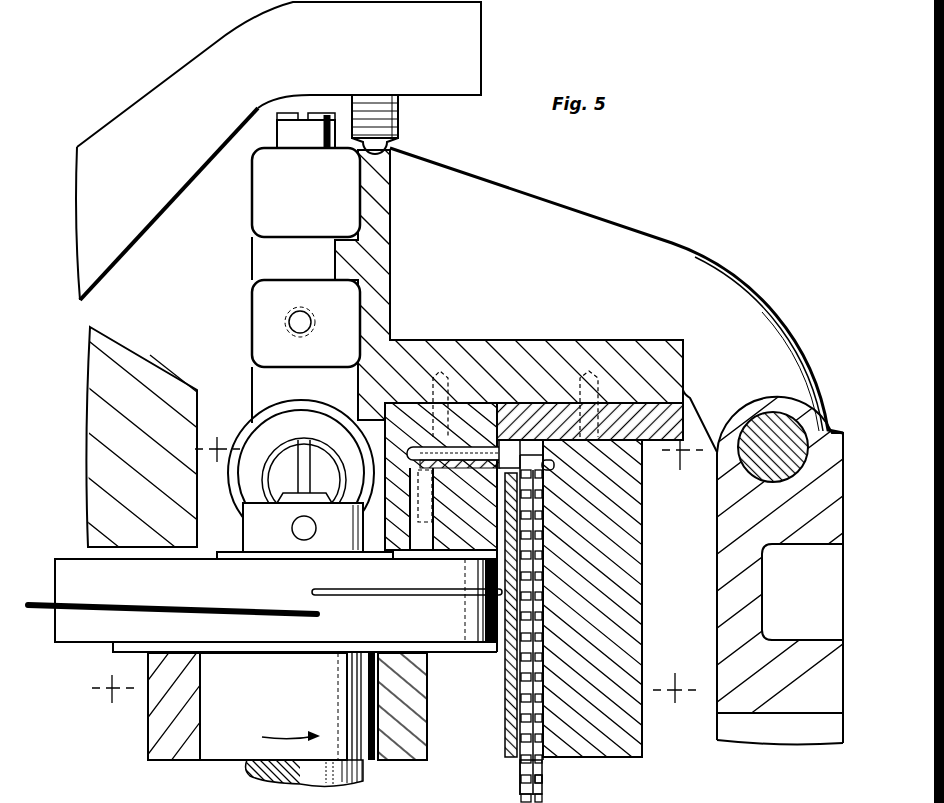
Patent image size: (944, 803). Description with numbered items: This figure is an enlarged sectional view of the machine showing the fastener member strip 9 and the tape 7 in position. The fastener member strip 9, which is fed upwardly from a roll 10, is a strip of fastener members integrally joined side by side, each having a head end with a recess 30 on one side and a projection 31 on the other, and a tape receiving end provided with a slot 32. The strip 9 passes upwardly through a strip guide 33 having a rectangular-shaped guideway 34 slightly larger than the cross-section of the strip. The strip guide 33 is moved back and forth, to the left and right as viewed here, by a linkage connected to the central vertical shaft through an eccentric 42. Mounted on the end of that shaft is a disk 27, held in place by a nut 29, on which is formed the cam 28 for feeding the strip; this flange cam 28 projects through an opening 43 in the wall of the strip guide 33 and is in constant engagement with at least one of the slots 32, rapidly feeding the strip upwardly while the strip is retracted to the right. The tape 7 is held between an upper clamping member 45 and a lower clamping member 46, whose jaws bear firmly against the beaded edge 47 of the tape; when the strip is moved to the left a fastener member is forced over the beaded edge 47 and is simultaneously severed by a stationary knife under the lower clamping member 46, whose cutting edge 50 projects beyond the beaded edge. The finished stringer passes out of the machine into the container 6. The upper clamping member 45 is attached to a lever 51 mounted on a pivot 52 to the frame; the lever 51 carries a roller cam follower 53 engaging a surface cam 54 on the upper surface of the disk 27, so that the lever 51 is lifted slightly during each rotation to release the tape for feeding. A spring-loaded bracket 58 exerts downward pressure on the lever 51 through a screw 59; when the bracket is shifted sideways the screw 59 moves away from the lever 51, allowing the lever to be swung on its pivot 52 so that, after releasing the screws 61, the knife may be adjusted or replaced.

The bracket 58 is at (190, 80).
The screw 59 is at (398, 110).
The lever 51 is at (474, 266).
The tape 7 is at (465, 445).
The upper clamping member 45 is at (473, 428).
The beaded edge 47 is at (520, 428).
The lower clamping member 46 is at (378, 420).
The screws 61 is at (424, 522).
The roller cam follower 53 is at (300, 414).
The nut 29 is at (292, 548).
The surface cam 54 is at (212, 560).
The cam 28 is at (330, 598).
The disk 27 is at (398, 640).
The eccentric 42 is at (160, 750).
The slot 32 is at (258, 718).
The projection 31 is at (285, 802).
The opening 43 is at (497, 650).
The fastener member strip 9 is at (530, 682).
The guideway 34 is at (508, 726).
The recess 30 is at (543, 783).
The cutting edge 50 is at (552, 466).
The strip guide 33 is at (625, 758).
The pivot 52 is at (785, 438).
The container 6 is at (449, 461).
The roll 10 is at (392, 700).